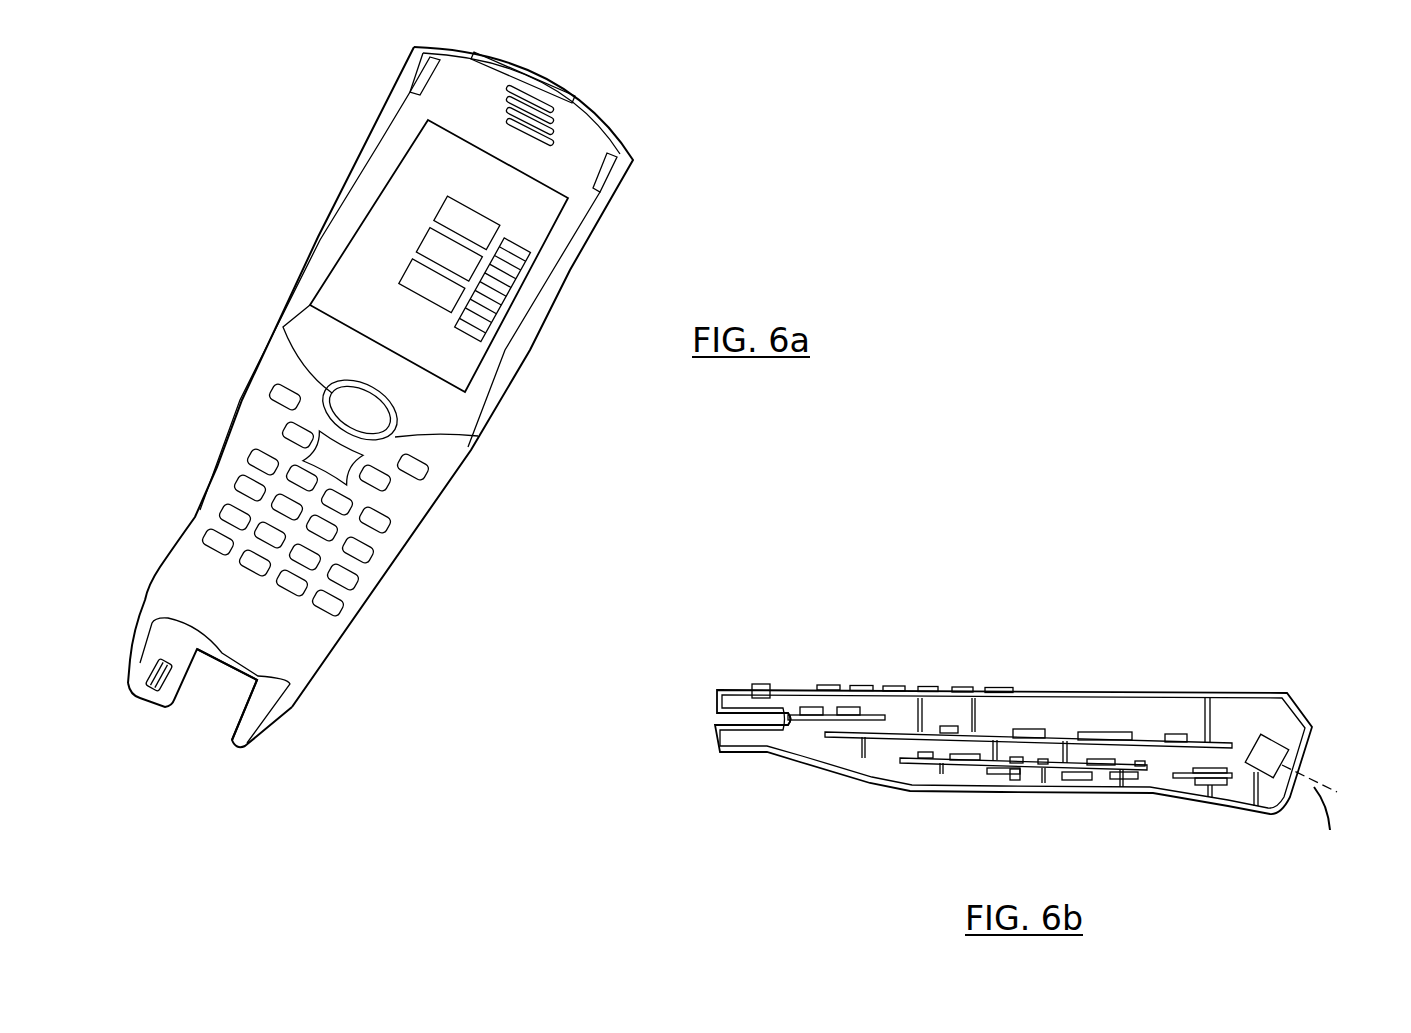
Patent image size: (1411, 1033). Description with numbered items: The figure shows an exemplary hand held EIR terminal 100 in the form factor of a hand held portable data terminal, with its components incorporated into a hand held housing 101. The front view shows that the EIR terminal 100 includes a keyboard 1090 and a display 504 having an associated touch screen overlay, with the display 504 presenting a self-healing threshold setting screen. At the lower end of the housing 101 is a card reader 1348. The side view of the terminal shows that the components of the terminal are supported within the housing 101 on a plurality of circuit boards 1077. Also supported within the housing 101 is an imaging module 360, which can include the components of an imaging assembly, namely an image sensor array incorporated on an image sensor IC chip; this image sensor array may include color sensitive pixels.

In FIG. 6A, the EIR terminal 100 is at (645, 157).
In FIG. 6B, the EIR terminal 100 is at (1250, 643).
In FIG. 6A, the hand held housing 101 is at (307, 655).
In FIG. 6B, the hand held housing 101 is at (1273, 692).
In FIG. 6A, the display 504 is at (548, 208).
In FIG. 6A, the keyboard 1090 is at (407, 505).
In FIG. 6B, the keyboard 1090 is at (905, 664).
In FIG. 6A, the card reader 1348 is at (205, 694).
In FIG. 6B, the card reader 1348 is at (706, 717).
In FIG. 6B, the circuit boards 1077 is at (907, 756).
In FIG. 6B, the imaging module 360 is at (1273, 740).